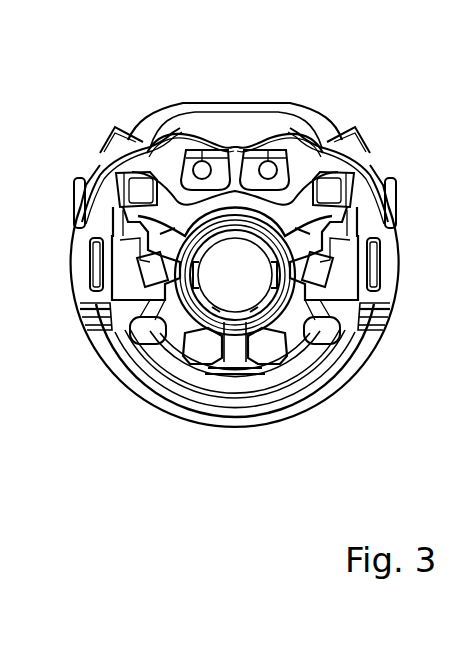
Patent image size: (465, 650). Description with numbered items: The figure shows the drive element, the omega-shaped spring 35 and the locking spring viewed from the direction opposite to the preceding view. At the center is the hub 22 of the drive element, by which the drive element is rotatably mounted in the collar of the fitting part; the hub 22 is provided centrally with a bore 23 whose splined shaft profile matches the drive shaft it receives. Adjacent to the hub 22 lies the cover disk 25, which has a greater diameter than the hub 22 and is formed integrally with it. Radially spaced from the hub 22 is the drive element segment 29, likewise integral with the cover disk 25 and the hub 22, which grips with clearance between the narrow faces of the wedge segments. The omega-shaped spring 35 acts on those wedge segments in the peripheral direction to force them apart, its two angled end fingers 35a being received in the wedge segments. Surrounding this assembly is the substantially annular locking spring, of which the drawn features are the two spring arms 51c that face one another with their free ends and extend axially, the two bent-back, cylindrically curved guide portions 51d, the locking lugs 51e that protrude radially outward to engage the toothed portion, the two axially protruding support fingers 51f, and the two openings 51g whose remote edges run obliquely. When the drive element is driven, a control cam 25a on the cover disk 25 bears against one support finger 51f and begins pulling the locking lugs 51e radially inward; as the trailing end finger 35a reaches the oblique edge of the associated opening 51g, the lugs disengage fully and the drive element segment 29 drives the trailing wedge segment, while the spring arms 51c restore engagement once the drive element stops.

The hub 22 is at (290, 377).
The bore 23 is at (232, 285).
The cover disk 25 is at (314, 208).
The control cam 25a is at (128, 188).
The drive element segment 29 is at (223, 382).
The omega-shaped spring 35 is at (147, 122).
The angled end finger 35a is at (203, 163).
The spring arm 51c is at (166, 120).
The guide portion 51d is at (90, 272).
The locking lug 51e is at (104, 140).
The support finger 51f is at (135, 204).
The opening 51g is at (258, 134).